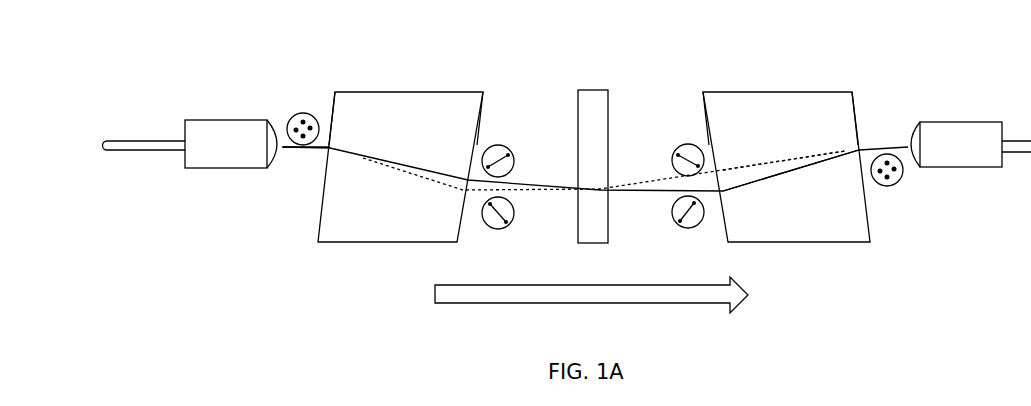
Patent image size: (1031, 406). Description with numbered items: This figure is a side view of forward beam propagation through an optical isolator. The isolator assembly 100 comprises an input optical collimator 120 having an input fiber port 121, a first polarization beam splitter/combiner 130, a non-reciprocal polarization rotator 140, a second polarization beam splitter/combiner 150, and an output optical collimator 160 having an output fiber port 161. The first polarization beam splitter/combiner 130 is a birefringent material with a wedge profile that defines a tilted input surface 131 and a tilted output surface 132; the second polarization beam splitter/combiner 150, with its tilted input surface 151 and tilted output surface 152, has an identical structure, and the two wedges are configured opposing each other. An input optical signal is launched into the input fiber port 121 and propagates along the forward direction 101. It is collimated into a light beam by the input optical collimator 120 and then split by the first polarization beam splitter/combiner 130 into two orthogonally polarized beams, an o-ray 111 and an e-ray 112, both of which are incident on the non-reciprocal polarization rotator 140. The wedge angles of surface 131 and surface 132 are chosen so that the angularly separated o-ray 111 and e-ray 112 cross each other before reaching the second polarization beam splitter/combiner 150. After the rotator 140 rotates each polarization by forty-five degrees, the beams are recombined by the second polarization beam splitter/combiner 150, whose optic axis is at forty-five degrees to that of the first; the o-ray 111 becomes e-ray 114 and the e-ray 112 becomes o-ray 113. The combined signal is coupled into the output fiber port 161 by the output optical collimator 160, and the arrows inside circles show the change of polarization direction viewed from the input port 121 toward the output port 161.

The isolator assembly 100 is at (966, 31).
The forward direction 101 is at (526, 305).
The o-ray 111 is at (413, 165).
The e-ray 112 is at (411, 176).
The o-ray 113 is at (777, 162).
The e-ray 114 is at (775, 180).
The input optical collimator 120 is at (224, 142).
The input fiber port 121 is at (170, 140).
The first polarization beam splitter/combiner 130 is at (397, 222).
The tilted input surface 131 is at (330, 108).
The tilted output surface 132 is at (490, 108).
The non-reciprocal polarization rotator 140 is at (595, 228).
The second polarization beam splitter/combiner 150 is at (807, 222).
The tilted input surface 151 is at (703, 108).
The tilted output surface 152 is at (858, 108).
The output optical collimator 160 is at (972, 147).
The output fiber port 161 is at (1030, 108).